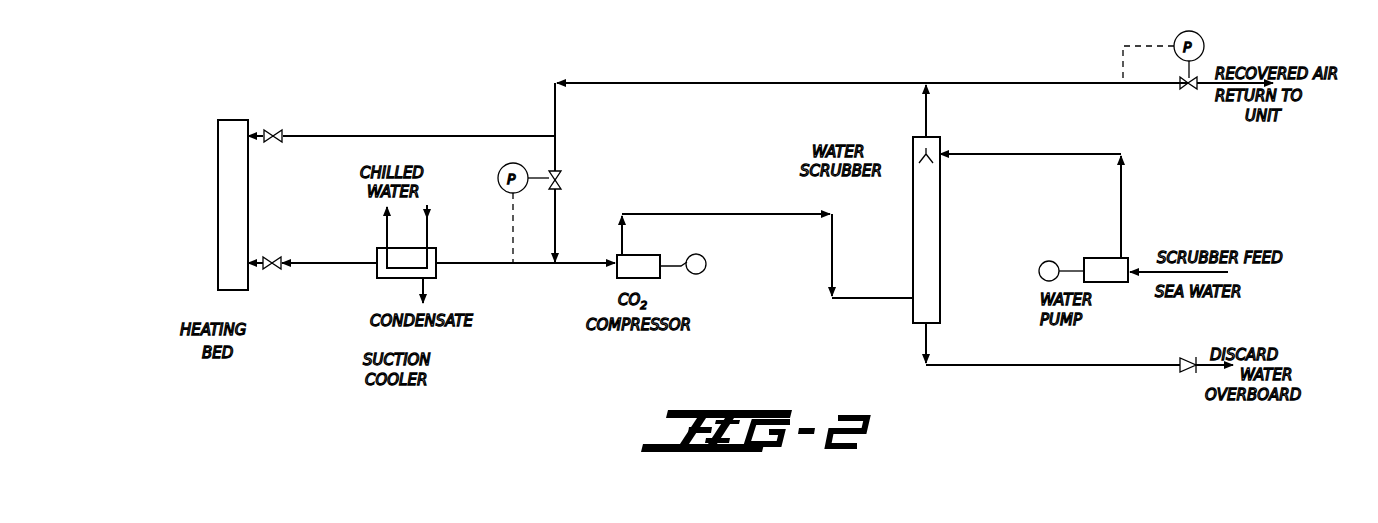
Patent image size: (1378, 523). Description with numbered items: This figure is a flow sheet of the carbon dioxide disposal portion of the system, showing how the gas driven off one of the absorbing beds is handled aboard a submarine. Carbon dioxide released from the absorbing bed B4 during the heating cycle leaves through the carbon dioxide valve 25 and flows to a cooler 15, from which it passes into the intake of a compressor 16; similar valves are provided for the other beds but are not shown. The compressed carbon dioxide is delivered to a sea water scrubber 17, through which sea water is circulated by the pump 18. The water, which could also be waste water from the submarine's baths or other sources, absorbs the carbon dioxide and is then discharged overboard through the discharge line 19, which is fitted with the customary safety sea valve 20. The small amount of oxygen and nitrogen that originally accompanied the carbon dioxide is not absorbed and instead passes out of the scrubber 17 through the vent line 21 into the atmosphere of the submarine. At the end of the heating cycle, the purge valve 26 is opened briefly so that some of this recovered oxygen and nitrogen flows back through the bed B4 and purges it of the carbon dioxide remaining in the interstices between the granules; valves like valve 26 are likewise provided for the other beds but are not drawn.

The absorbing bed B4 is at (218, 158).
The purge valve 26 is at (272, 130).
The carbon dioxide valve 25 is at (268, 256).
The cooler 15 is at (440, 270).
The compressor 16 is at (664, 279).
The sea water scrubber 17 is at (941, 220).
The pump 18 is at (1100, 258).
The discharge line 19 is at (1130, 364).
The safety sea valve 20 is at (1185, 374).
The vent line 21 is at (1046, 83).